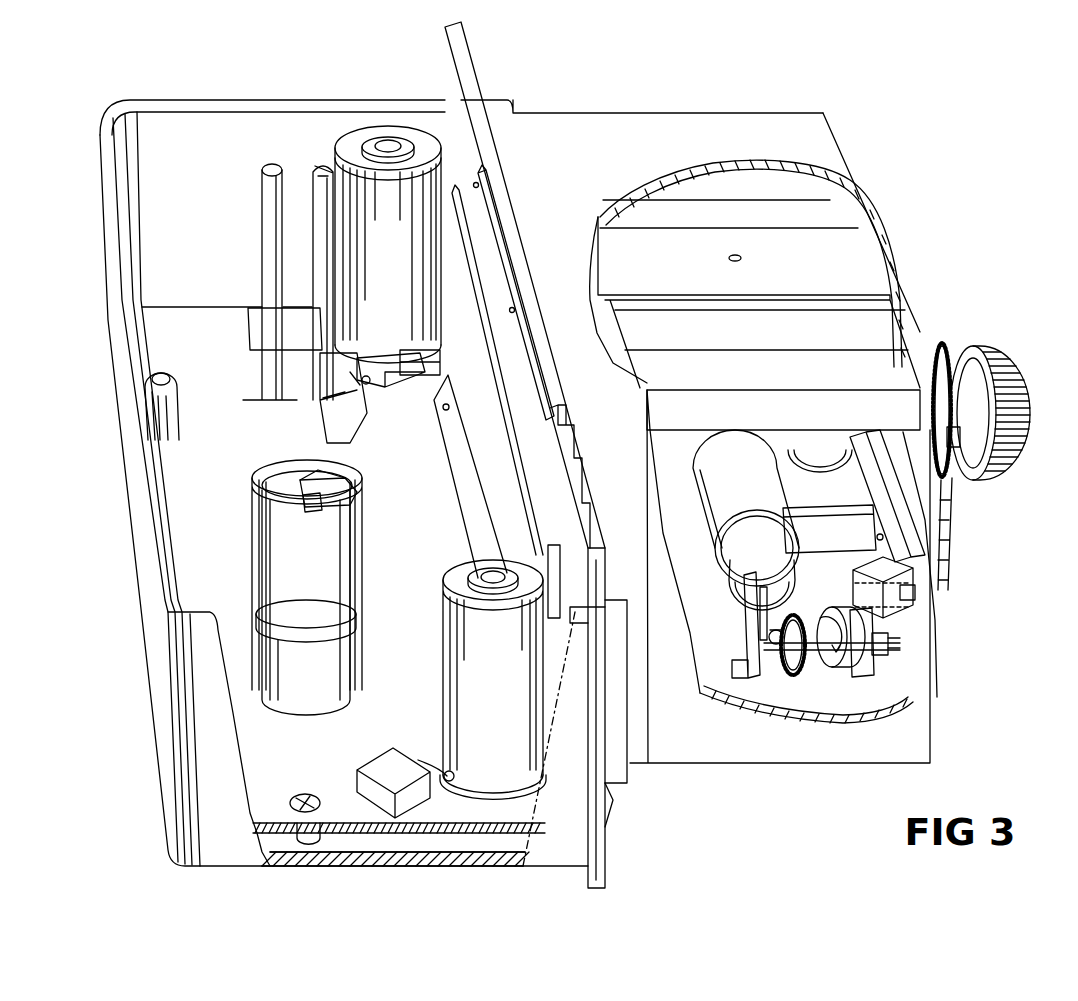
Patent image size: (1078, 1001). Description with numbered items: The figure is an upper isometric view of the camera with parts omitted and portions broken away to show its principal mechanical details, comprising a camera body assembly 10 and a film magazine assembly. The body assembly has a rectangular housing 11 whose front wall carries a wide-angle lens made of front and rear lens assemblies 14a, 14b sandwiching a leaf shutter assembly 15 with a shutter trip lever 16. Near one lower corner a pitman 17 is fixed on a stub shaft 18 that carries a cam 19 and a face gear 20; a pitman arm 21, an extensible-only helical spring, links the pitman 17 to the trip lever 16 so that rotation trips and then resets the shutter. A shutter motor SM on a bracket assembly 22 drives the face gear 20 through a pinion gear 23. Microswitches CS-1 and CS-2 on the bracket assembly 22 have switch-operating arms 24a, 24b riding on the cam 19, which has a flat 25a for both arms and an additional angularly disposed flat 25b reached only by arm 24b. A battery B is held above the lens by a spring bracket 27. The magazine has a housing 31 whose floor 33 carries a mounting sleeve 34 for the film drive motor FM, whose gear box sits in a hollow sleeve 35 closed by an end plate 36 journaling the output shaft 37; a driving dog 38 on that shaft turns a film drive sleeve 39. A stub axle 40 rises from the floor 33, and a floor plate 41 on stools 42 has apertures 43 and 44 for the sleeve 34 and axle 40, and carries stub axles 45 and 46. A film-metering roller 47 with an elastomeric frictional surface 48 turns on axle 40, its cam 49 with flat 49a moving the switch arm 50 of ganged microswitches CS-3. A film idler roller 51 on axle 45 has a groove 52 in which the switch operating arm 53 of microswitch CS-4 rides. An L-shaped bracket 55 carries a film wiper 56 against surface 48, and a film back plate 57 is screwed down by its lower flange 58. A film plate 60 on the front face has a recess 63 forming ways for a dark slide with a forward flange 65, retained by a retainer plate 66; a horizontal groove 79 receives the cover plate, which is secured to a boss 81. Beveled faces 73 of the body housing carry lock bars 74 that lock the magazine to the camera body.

The camera body assembly 10 is at (598, 157).
The housing 11 is at (822, 137).
The front lens assembly 14a is at (1015, 392).
The rear lens assembly 14b is at (843, 440).
The leaf shutter assembly 15 is at (940, 340).
The shutter trip lever 16 is at (955, 437).
The pitman 17 is at (940, 660).
The stub shaft 18 is at (768, 660).
The cam 19 is at (818, 606).
The face gear 20 is at (795, 677).
The pitman arm 21 is at (948, 515).
The bracket assembly 22 is at (835, 512).
The pinion gear 23 is at (768, 634).
The switch-operating arm 24a is at (900, 642).
The switch-operating arm 24b is at (850, 617).
The flat 25a is at (878, 657).
The angularly disposed flat 25b is at (848, 677).
The spring bracket 27 is at (610, 258).
The housing 31 is at (160, 738).
The floor 33 is at (393, 863).
The mounting sleeve 34 is at (351, 655).
The hollow sleeve 35 is at (362, 580).
The end plate 36 is at (351, 487).
The output shaft 37 is at (304, 513).
The driving dog 38 is at (308, 471).
The film drive sleeve 39 is at (363, 555).
The stub axle 40 is at (388, 140).
The floor plate 41 is at (183, 342).
The stools 42 is at (322, 832).
The aperture 43 is at (358, 703).
The aperture 44 is at (441, 353).
The stub axle 45 is at (486, 578).
The stub axle 46 is at (262, 192).
The film-metering roller 47 is at (364, 144).
The elastomeric frictional surface 48 is at (436, 293).
The cam 49 is at (357, 372).
The flat 49a is at (391, 380).
The switch arm 50 is at (358, 402).
The film idler roller 51 is at (455, 640).
The groove 52 is at (492, 788).
The switch operating arm 53 is at (418, 752).
The L-shaped bracket 55 is at (312, 173).
The film wiper 56 is at (330, 166).
The film back plate 57 is at (470, 460).
The lower flange 58 is at (468, 512).
The film plate 60 is at (447, 38).
The recess 63 is at (607, 797).
The forward flange 65 is at (627, 738).
The retainer plate 66 is at (607, 570).
The beveled faces 73 is at (563, 420).
The lock bars 74 is at (506, 232).
The horizontal groove 79 is at (562, 526).
The boss 81 is at (178, 417).
The battery B is at (840, 216).
The microswitch CS-1 is at (915, 588).
The microswitch CS-2 is at (862, 573).
The ganged microswitches CS-3 is at (323, 405).
The microswitch CS-4 is at (380, 762).
The film drive motor FM is at (258, 604).
The shutter motor SM is at (746, 520).